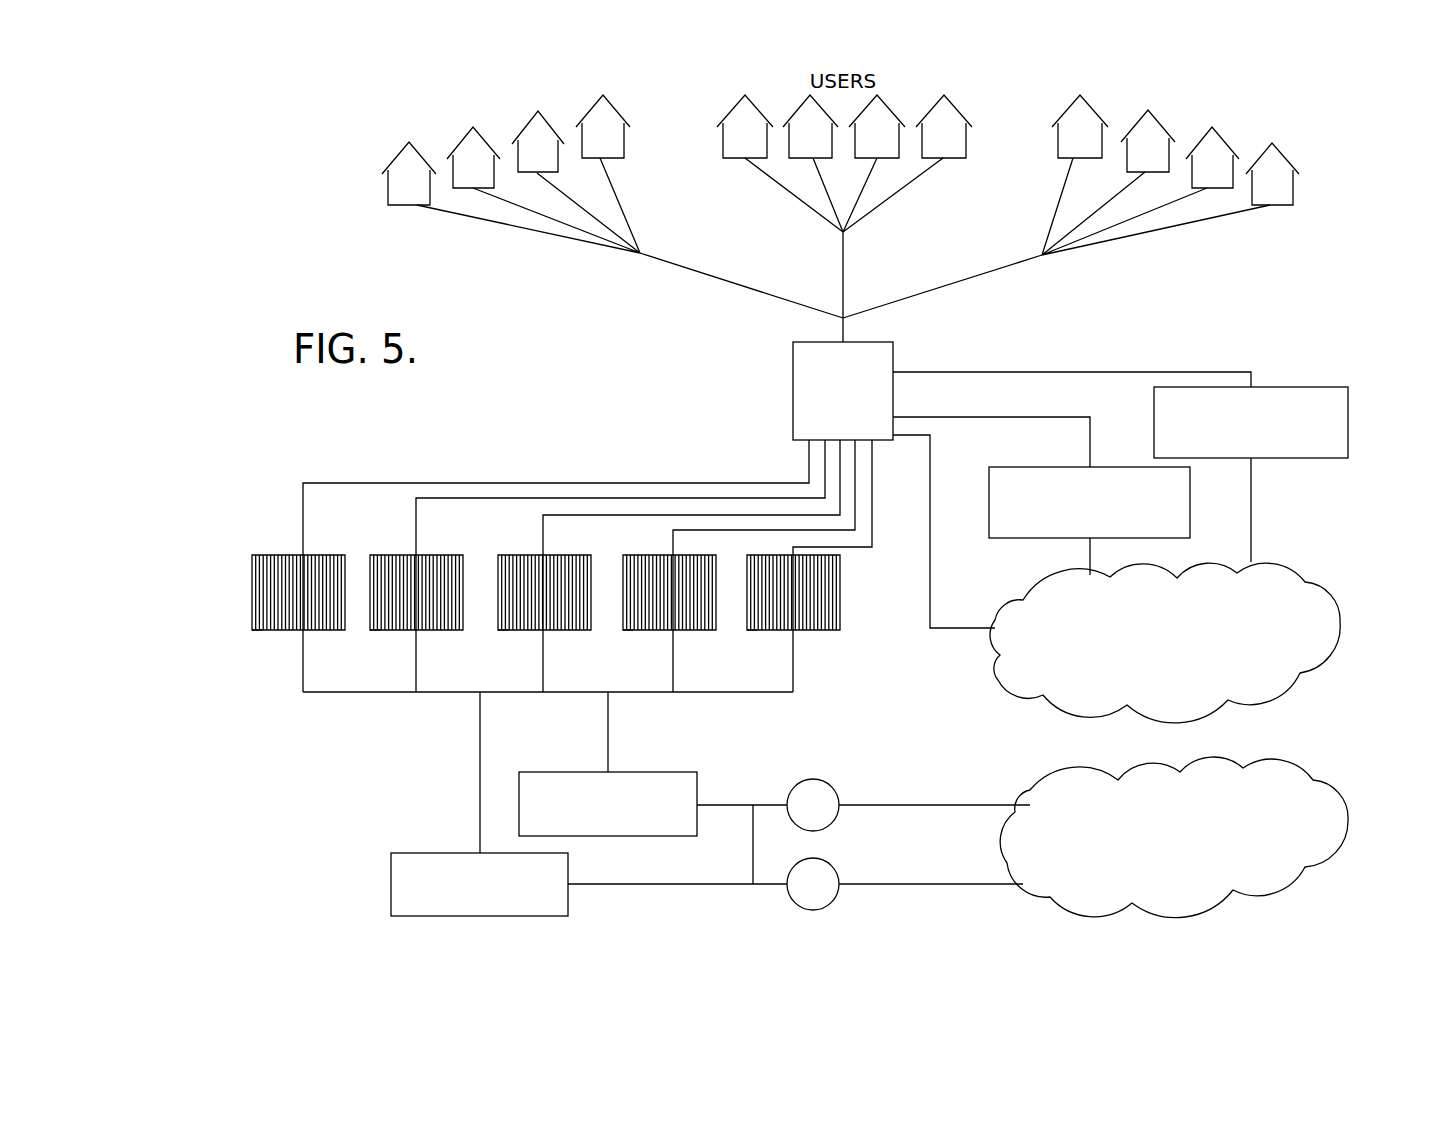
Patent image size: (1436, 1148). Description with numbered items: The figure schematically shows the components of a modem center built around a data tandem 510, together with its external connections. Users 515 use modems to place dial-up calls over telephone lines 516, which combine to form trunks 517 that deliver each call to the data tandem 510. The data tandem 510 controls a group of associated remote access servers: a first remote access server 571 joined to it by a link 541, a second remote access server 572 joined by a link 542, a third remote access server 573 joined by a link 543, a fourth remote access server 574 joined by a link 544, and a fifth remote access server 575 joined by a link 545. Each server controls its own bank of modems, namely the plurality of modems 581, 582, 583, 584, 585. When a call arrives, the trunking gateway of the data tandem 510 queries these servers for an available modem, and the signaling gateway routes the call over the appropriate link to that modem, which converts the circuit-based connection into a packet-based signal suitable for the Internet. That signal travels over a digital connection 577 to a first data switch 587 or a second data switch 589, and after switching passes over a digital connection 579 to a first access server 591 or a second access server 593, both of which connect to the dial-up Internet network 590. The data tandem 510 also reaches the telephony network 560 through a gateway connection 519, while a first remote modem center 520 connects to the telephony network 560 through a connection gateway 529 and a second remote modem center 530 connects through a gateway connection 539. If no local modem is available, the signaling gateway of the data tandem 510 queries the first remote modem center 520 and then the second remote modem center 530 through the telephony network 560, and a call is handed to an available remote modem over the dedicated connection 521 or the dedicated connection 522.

The data tandem 510 is at (878, 341).
The users 515 is at (1293, 192).
The telephone lines 516 is at (617, 198).
The trunks 517 is at (748, 288).
The gateway connection 519 is at (930, 552).
The first remote modem center 520 is at (1293, 459).
The dedicated connection 521 is at (1172, 371).
The dedicated connection 522 is at (1057, 417).
The connection gateway 529 is at (1251, 507).
The second remote modem center 530 is at (989, 503).
The gateway connection 539 is at (1087, 547).
The link 541 is at (367, 482).
The link 542 is at (508, 498).
The link 543 is at (625, 513).
The link 544 is at (793, 528).
The link 545 is at (873, 530).
The telephony network 560 is at (1083, 717).
The first remote access server 571 is at (278, 553).
The second remote access server 572 is at (400, 553).
The third remote access server 573 is at (528, 553).
The fourth remote access server 574 is at (657, 553).
The fifth remote access server 575 is at (840, 595).
The digital connection 577 is at (375, 693).
The digital connection 579 is at (688, 886).
The plurality of modems 581 is at (262, 634).
The plurality of modems 582 is at (377, 634).
The plurality of modems 583 is at (505, 634).
The plurality of modems 584 is at (630, 634).
The plurality of modems 585 is at (755, 634).
The first data switch 587 is at (390, 887).
The second data switch 589 is at (608, 836).
The dial-up Internet network 590 is at (1350, 790).
The first access server 591 is at (812, 778).
The second access server 593 is at (790, 903).